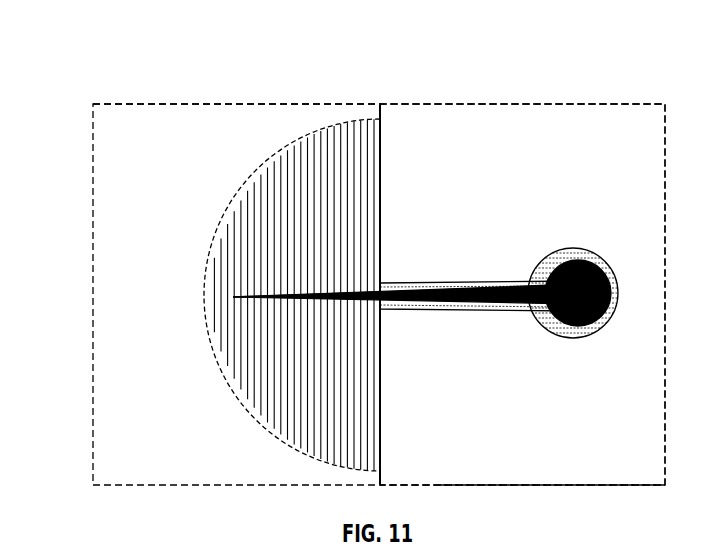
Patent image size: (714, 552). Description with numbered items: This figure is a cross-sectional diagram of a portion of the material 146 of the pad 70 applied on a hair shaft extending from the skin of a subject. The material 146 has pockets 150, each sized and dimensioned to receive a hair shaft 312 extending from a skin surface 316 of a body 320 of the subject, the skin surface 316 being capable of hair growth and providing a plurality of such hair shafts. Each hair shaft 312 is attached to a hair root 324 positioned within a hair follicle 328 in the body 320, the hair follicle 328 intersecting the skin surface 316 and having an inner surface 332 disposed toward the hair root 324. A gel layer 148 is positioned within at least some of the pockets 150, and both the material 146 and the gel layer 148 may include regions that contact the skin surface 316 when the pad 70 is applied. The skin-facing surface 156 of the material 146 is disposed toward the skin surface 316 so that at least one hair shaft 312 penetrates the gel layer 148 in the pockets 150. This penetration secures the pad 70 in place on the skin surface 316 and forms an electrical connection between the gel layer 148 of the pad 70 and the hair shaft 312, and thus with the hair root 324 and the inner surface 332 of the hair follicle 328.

The pad 70 is at (166, 76).
The material 146 is at (232, 104).
The gel layer 148 is at (235, 263).
The pockets 150 is at (303, 132).
The skin-facing surface 156 is at (380, 108).
The hair shaft 312 is at (347, 300).
The skin surface 316 is at (381, 193).
The body 320 is at (628, 450).
The hair root 324 is at (572, 260).
The hair follicle 328 is at (532, 314).
The inner surface 332 is at (597, 330).